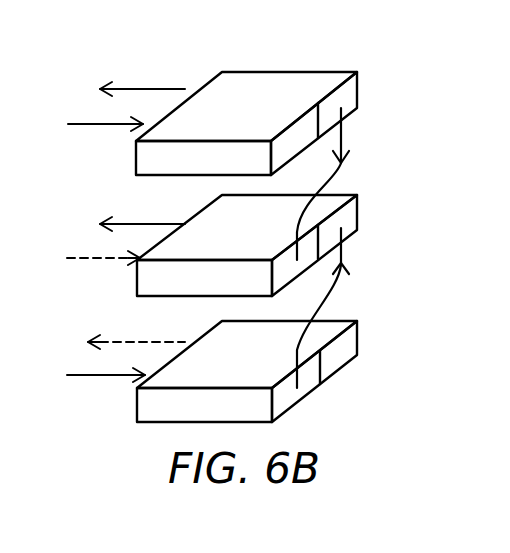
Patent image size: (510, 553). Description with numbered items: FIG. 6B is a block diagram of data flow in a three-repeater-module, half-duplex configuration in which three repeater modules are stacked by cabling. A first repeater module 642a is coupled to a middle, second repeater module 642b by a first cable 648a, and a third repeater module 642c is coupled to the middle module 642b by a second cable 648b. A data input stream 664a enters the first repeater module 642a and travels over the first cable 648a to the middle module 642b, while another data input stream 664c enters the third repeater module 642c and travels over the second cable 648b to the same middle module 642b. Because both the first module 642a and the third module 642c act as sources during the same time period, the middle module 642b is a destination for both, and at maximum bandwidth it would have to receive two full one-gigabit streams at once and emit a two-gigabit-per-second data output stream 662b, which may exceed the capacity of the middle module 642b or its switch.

The first repeater module 642a is at (277, 72).
The second repeater module 642b is at (355, 195).
The third repeater module 642c is at (355, 321).
The first cable 648a is at (346, 135).
The second cable 648b is at (343, 258).
The data input stream 664a is at (88, 123).
The data output stream 662b is at (127, 223).
The data input stream 664c is at (98, 378).